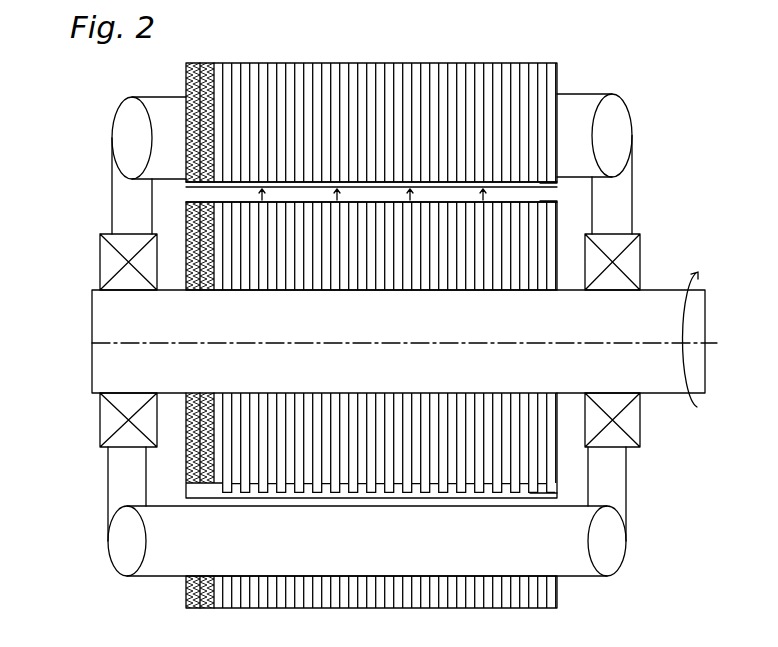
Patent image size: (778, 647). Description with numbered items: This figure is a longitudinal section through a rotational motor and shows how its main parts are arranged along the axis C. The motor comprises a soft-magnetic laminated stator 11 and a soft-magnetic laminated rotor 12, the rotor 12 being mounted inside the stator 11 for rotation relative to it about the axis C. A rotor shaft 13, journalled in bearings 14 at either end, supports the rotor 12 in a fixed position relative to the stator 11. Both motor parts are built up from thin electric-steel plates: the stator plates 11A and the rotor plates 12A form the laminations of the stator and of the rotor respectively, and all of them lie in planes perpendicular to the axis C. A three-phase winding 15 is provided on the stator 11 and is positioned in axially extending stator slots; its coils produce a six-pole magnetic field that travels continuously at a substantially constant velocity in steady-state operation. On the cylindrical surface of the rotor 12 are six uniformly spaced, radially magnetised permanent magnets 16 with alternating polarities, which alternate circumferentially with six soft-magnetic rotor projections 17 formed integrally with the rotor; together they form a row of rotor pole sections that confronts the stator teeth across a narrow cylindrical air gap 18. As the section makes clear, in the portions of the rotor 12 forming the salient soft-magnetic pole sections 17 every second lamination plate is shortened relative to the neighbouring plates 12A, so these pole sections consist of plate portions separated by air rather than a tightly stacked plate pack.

The stator 11 is at (265, 68).
The electric-steel plates of the stator 11A is at (420, 62).
The rotor 12 is at (233, 231).
The electric-steel plates of the rotor 12A is at (553, 223).
The rotor shaft 13 is at (105, 325).
The bearings 14 is at (108, 267).
The three-phase winding 15 is at (125, 128).
The permanent magnets 16 is at (203, 195).
The soft-magnetic rotor projections 17 is at (540, 488).
The air gap 18 is at (550, 185).
The axis C is at (82, 347).